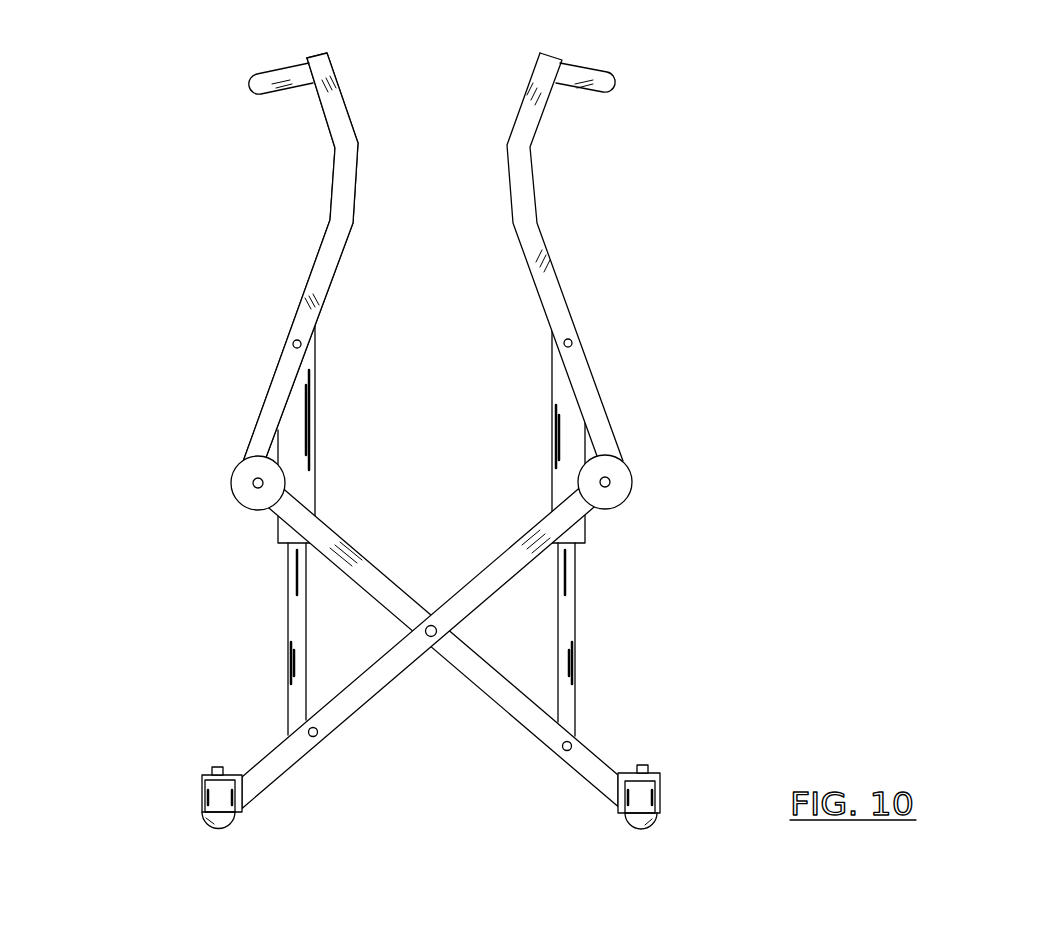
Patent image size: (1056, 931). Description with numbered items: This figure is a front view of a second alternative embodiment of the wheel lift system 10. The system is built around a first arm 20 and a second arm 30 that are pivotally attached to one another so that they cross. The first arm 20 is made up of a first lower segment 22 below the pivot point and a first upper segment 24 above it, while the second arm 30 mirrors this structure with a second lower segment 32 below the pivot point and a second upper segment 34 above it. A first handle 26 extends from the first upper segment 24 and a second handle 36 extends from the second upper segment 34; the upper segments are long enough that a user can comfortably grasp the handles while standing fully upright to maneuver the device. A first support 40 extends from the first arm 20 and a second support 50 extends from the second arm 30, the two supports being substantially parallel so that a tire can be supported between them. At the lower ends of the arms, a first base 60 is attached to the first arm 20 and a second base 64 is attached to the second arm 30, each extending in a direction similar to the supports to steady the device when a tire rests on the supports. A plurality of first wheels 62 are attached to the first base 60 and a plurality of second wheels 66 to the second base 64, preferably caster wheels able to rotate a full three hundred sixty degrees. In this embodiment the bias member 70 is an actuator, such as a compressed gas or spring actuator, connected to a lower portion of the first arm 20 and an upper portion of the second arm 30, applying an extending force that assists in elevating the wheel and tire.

The wheel lift system 10 is at (857, 122).
The first arm 20 is at (355, 430).
The first lower segment 22 is at (325, 518).
The first upper segment 24 is at (298, 302).
The first handle 26 is at (280, 67).
The second arm 30 is at (486, 420).
The second lower segment 32 is at (532, 522).
The second upper segment 34 is at (575, 315).
The second handle 36 is at (587, 63).
The first support 40 is at (233, 482).
The second support 50 is at (632, 480).
The first base 60 is at (202, 773).
The first wheels 62 is at (214, 830).
The second base 64 is at (650, 767).
The second wheels 66 is at (647, 830).
The bias member 70 is at (287, 615).